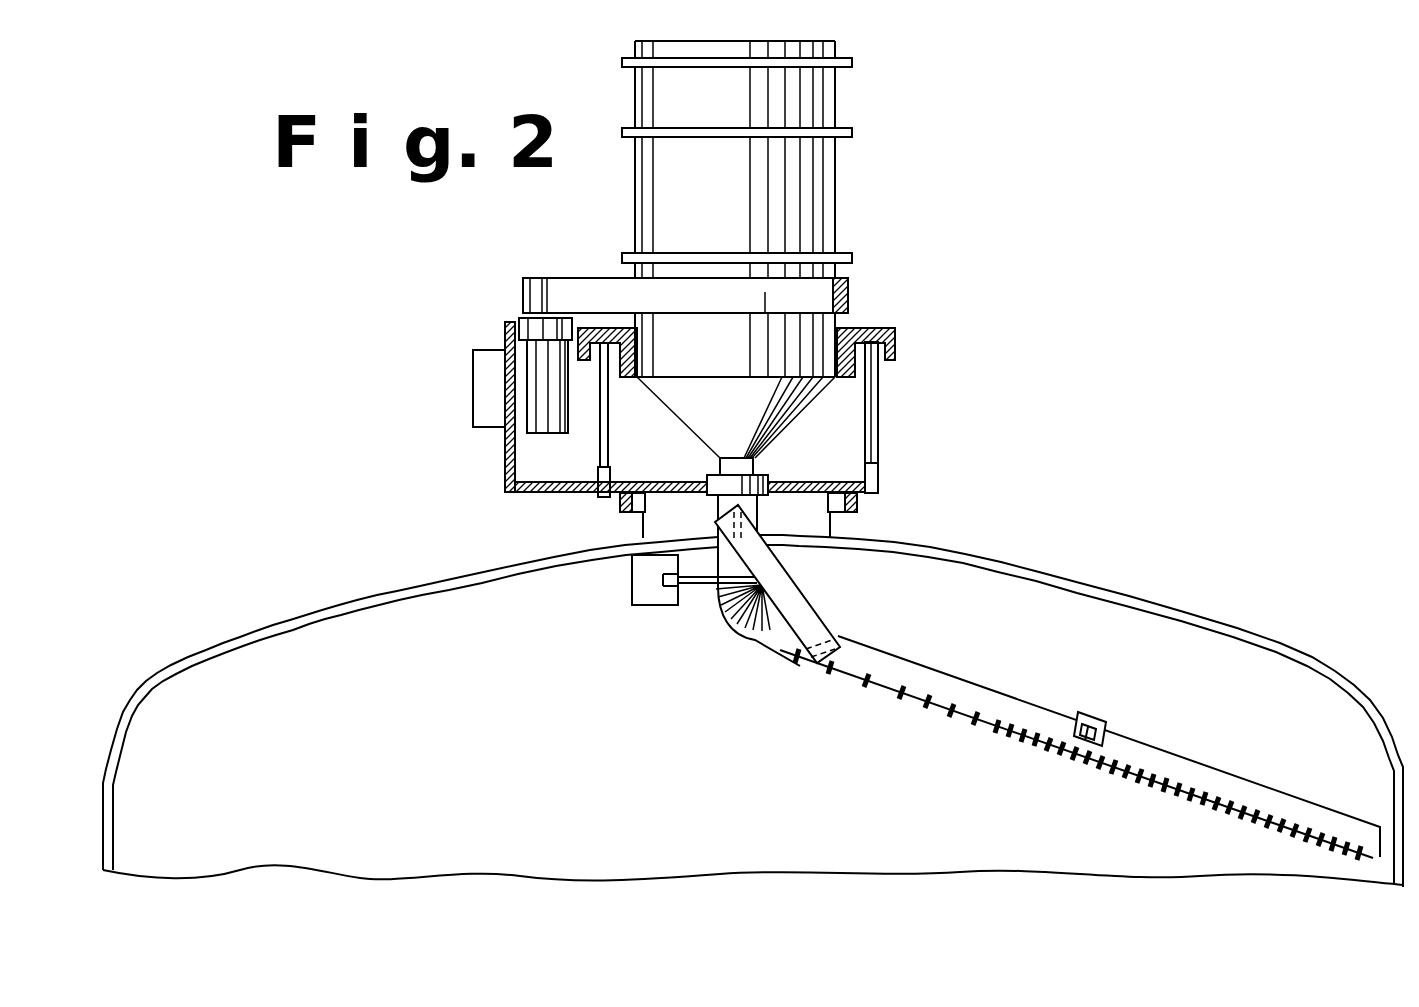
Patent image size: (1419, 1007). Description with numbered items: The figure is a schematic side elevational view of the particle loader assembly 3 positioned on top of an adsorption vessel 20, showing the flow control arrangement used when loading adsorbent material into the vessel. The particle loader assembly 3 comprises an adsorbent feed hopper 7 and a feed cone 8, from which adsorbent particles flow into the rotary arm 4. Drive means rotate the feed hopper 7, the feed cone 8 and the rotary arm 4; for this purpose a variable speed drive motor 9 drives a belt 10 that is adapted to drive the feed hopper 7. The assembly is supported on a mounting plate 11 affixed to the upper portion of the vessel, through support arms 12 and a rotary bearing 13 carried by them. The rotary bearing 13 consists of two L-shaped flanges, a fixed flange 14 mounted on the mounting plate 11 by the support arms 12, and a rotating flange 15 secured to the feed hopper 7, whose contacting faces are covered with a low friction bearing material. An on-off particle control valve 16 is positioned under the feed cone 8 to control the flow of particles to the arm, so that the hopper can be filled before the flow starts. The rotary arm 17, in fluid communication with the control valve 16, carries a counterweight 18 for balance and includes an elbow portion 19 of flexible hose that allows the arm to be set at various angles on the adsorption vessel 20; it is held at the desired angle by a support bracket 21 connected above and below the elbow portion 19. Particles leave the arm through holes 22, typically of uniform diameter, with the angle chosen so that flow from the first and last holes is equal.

The particle loader assembly 3 is at (730, 294).
The rotary arm 4 is at (942, 680).
The adsorbent feed hopper 7 is at (835, 177).
The feed cone 8 is at (847, 452).
The variable speed drive motor 9 is at (545, 405).
The belt 10 is at (585, 277).
The mounting plate 11 is at (545, 490).
The support arms 12 is at (880, 430).
The rotary bearing 13 is at (852, 330).
The fixed flange 14 is at (888, 357).
The rotating flange 15 is at (895, 328).
The on-off particle control valve 16 is at (778, 500).
The rotary arm 17 is at (1140, 738).
The counterweight 18 is at (632, 580).
The elbow portion 19 is at (732, 610).
The adsorption vessel 20 is at (1345, 668).
The support bracket 21 is at (790, 580).
The holes 22 is at (945, 713).